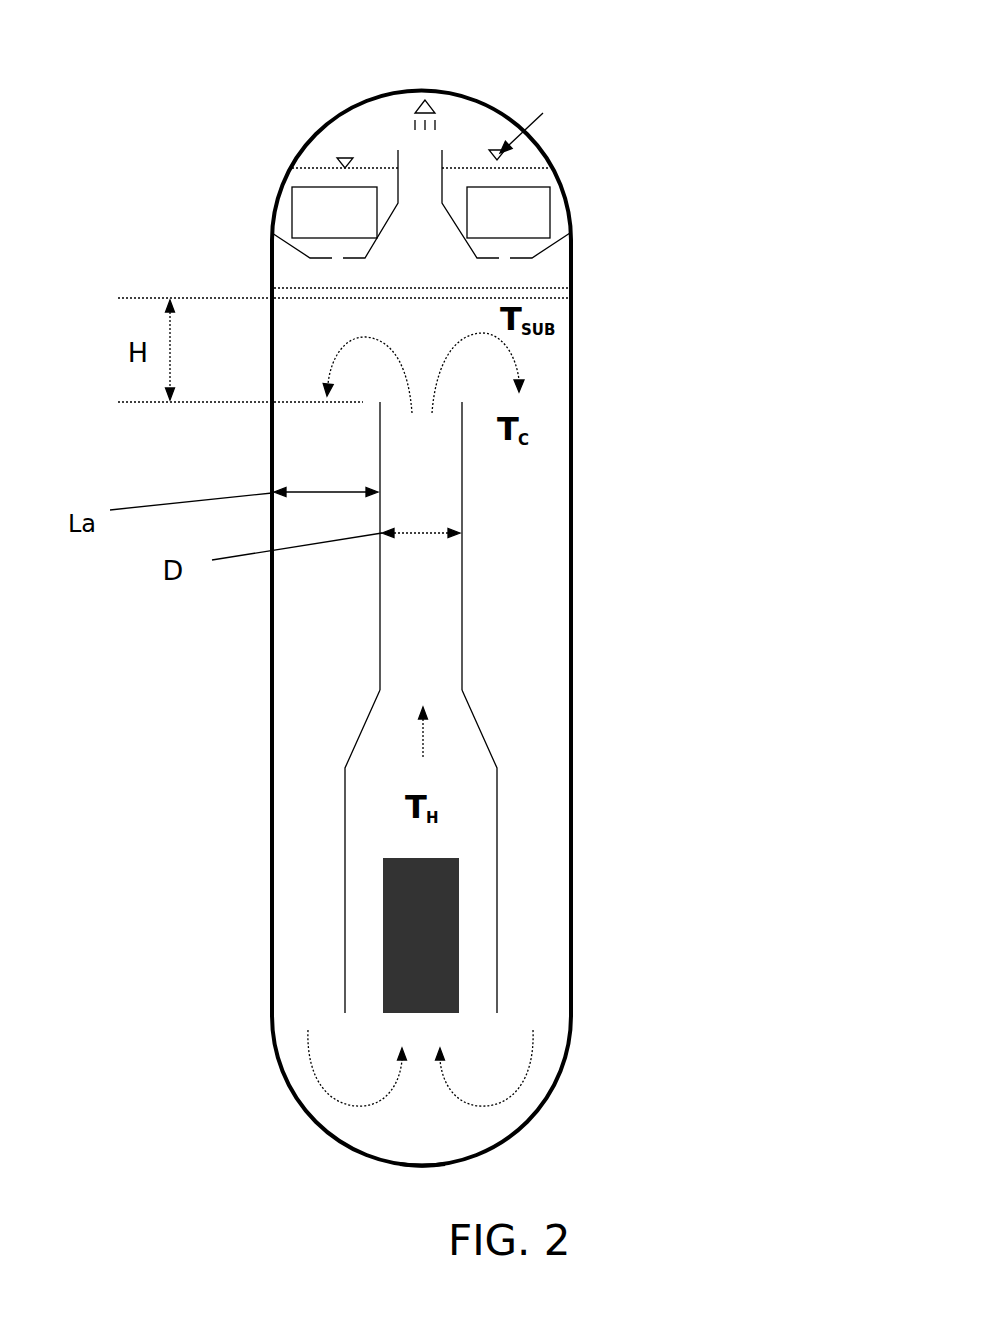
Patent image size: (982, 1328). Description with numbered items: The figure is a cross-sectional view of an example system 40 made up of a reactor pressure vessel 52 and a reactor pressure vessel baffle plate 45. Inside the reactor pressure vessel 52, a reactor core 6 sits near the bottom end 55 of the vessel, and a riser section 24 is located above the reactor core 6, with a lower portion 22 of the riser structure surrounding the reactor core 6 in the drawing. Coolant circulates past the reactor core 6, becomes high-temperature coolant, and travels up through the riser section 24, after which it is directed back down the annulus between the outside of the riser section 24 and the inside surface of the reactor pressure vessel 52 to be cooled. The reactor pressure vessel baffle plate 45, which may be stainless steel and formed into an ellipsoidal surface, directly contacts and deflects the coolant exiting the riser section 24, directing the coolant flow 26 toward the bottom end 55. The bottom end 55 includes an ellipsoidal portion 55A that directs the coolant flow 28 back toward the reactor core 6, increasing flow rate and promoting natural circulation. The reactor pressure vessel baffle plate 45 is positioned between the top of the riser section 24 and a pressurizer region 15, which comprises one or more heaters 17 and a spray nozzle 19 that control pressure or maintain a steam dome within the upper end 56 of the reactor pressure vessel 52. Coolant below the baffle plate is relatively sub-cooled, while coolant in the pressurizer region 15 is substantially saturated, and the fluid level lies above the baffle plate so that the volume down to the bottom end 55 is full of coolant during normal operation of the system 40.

The reactor core 6 is at (528, 923).
The pressurizer region 15 is at (323, 97).
The heaters 17 is at (293, 187).
The spray nozzle 19 is at (425, 100).
The lower tube section 22 is at (316, 851).
The riser section 24 is at (560, 546).
The coolant flow 26 is at (538, 373).
The coolant flow 28 is at (313, 1068).
The system 40 is at (460, 615).
The reactor pressure vessel baffle plate 45 is at (514, 269).
The reactor pressure vessel 52 is at (505, 663).
The bottom end 55 is at (313, 1125).
The ellipsoidal portion 55A is at (468, 1157).
The upper end 56 is at (474, 100).